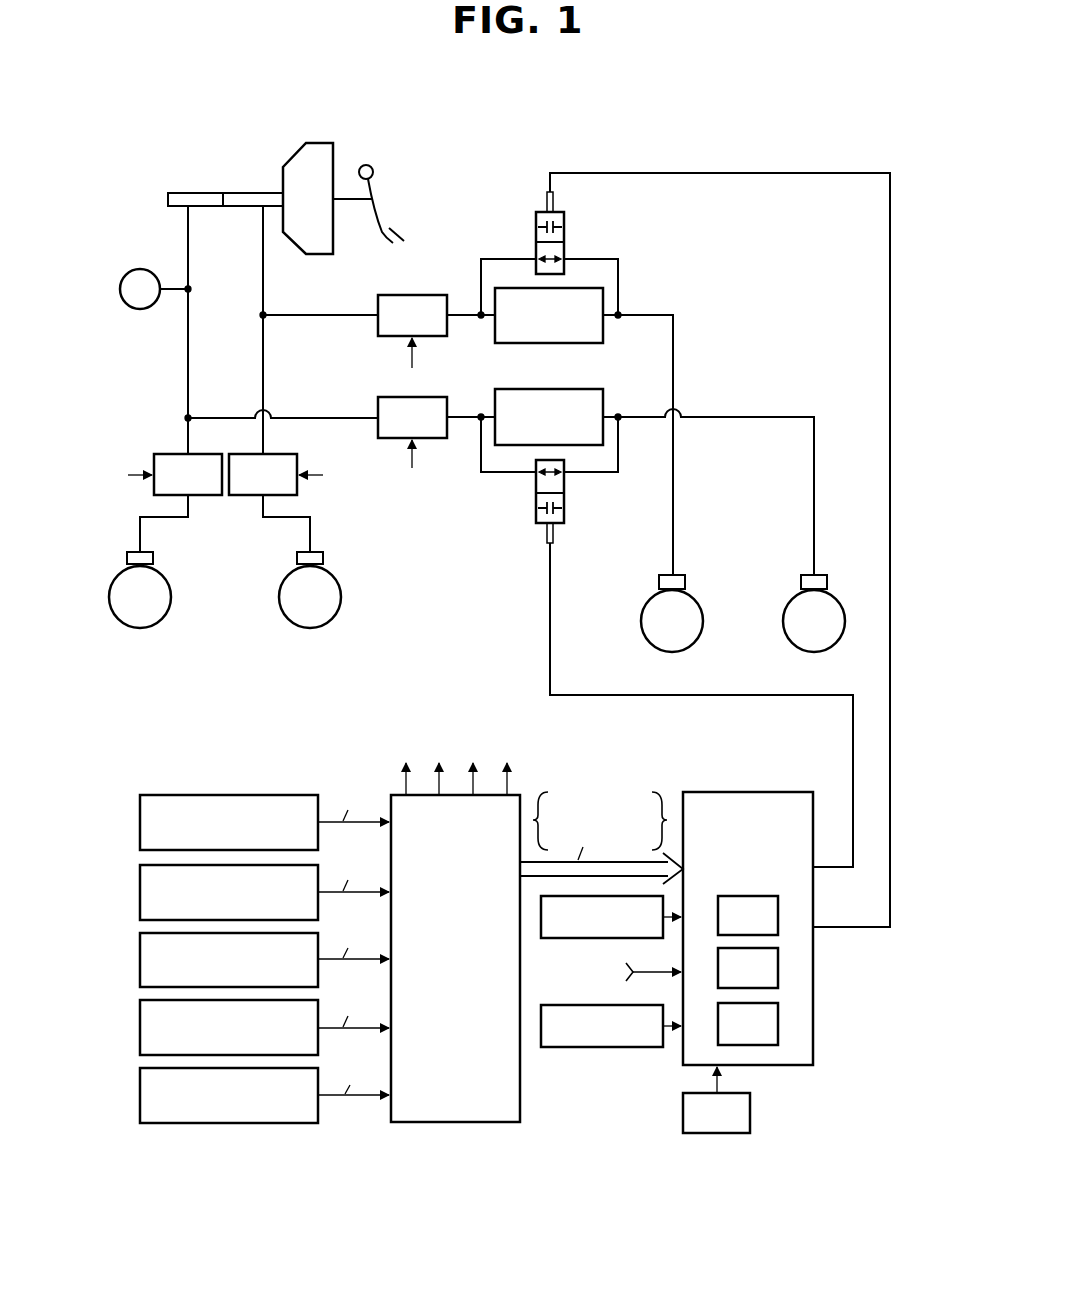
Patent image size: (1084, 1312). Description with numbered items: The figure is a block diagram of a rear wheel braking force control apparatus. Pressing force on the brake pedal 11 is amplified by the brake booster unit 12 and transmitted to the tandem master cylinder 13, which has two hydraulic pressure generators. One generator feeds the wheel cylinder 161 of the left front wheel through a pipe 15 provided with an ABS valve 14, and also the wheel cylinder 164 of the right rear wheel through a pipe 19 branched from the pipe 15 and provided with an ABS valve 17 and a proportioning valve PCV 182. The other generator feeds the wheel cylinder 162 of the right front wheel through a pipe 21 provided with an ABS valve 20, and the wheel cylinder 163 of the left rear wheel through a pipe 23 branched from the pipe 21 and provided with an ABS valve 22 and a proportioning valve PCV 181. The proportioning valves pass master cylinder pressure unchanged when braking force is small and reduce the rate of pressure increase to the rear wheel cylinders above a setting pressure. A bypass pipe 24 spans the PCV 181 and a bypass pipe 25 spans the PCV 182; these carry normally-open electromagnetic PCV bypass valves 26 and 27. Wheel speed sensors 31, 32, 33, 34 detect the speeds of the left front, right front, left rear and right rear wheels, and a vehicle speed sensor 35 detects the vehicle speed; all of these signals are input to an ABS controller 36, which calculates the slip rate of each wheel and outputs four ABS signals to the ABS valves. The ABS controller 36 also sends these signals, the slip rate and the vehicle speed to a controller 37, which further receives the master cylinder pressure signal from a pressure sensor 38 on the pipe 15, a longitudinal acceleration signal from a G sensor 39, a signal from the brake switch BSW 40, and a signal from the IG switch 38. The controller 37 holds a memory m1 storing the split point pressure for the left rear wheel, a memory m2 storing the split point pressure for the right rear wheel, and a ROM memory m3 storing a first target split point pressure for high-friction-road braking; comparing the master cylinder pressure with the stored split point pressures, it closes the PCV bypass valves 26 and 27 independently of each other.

The brake pedal 11 is at (378, 218).
The brake booster unit 12 is at (318, 143).
The tandem master cylinder 13 is at (183, 191).
The ABS valve 14 is at (173, 452).
The pipe 15 is at (188, 357).
The wheel cylinder of the left front wheel 161 is at (152, 550).
The wheel cylinder of the right front wheel 162 is at (323, 550).
The wheel cylinder of the left rear wheel 163 is at (685, 575).
The wheel cylinder of the right rear wheel 164 is at (827, 575).
The ABS valve 17 is at (433, 397).
The PCV (proportioning valve) 181 is at (603, 327).
The PCV (proportioning valve) 182 is at (603, 403).
The pipe 19 is at (333, 416).
The ABS valve 20 is at (277, 452).
The pipe 21 is at (263, 363).
The ABS valve 22 is at (420, 295).
The pipe 23 is at (318, 314).
The bypass pipe 24 is at (618, 286).
The bypass pipe 25 is at (618, 448).
The PCV bypass valve 26 is at (564, 252).
The PCV bypass valve 27 is at (564, 508).
The wheel speed sensor 31 is at (140, 832).
The wheel speed sensor 32 is at (140, 902).
The wheel speed sensor 33 is at (140, 969).
The wheel speed sensor 34 is at (140, 1038).
The vehicle speed sensor 35 is at (140, 1105).
The ABS controller 36 is at (520, 1112).
The controller 37 is at (787, 1065).
The pressure sensor / IG switch 38 is at (142, 267).
The G sensor 39 is at (617, 1048).
The brake switch (BSW) 40 is at (722, 1135).
The memory m1 is at (778, 972).
The memory m2 is at (778, 1020).
The memory m3 is at (778, 915).